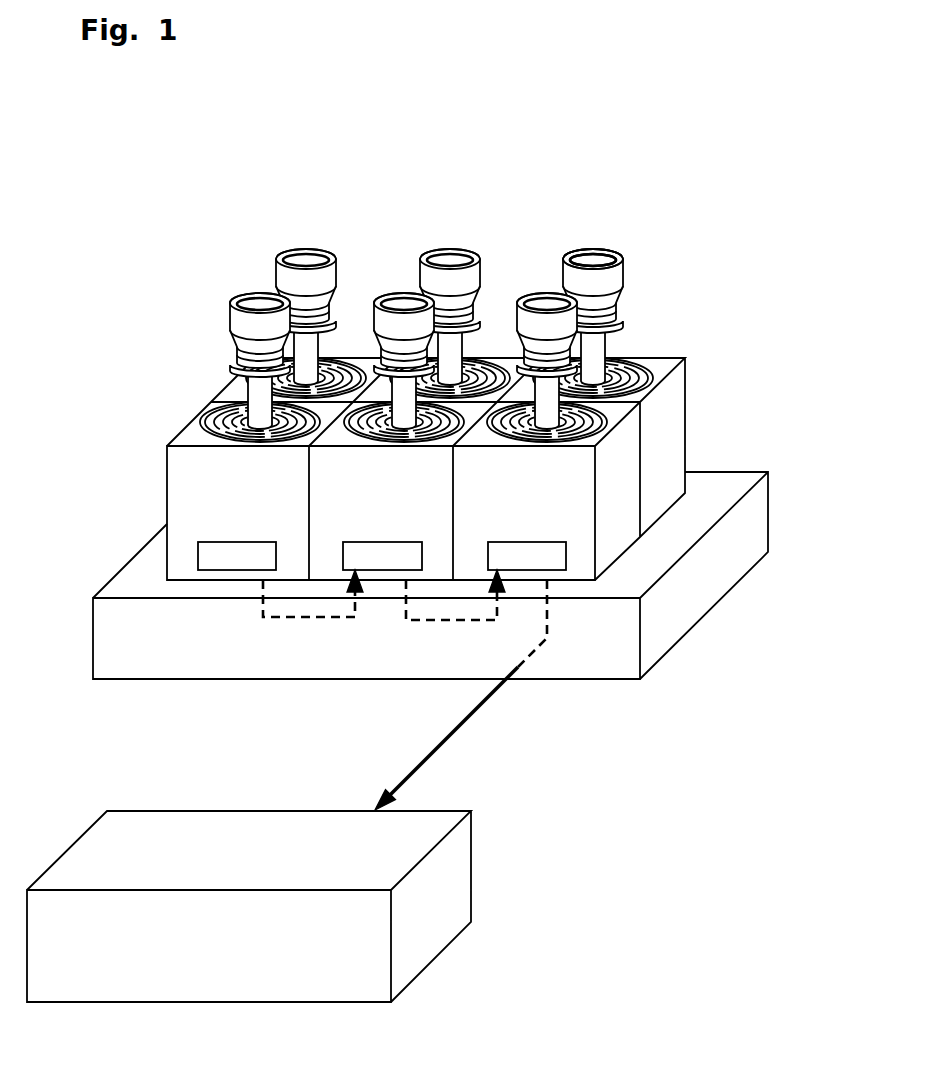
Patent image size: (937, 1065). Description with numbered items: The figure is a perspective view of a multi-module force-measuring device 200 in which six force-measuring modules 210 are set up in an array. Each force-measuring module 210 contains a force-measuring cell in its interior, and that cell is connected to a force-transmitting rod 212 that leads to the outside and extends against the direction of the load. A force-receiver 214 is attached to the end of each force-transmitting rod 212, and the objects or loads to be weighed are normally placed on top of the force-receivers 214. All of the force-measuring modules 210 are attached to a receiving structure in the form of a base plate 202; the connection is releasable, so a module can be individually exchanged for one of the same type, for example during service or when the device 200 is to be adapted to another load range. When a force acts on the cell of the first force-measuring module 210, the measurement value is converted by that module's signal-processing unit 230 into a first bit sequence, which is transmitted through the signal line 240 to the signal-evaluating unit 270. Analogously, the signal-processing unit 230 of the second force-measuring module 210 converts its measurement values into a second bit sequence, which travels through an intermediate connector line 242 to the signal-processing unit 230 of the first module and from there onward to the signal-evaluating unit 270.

The multi-module force-measuring device 200 is at (397, 613).
The base plate 202 is at (192, 650).
The force-measuring module 210 is at (216, 526).
The force-transmitting rod 212 is at (590, 356).
The force-receiver 214 is at (593, 262).
The signal-processing unit 230 is at (221, 567).
The signal line 240 is at (420, 763).
The intermediate connector line 242 is at (415, 620).
The signal-evaluating unit 270 is at (194, 955).